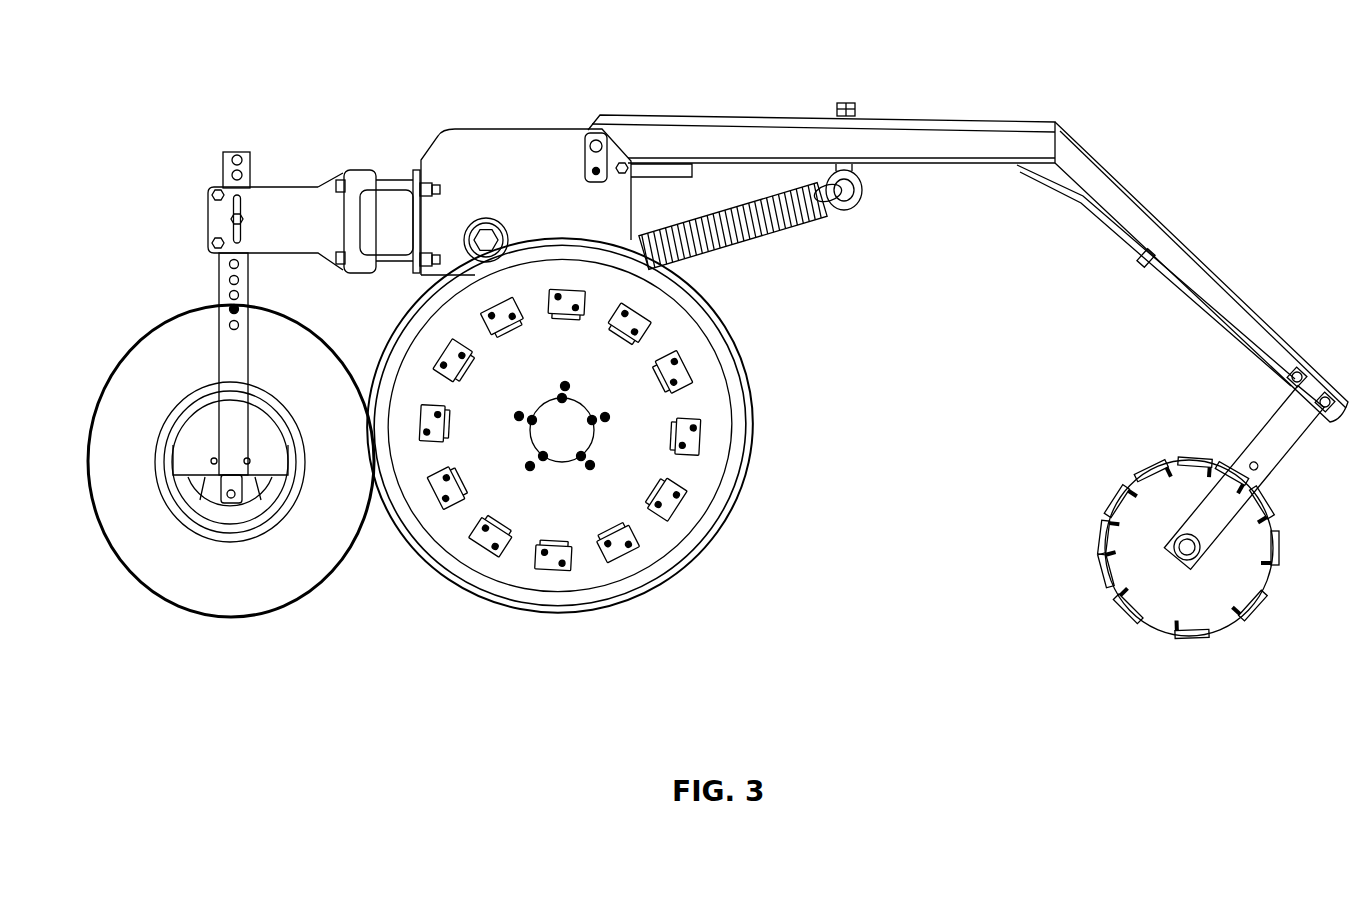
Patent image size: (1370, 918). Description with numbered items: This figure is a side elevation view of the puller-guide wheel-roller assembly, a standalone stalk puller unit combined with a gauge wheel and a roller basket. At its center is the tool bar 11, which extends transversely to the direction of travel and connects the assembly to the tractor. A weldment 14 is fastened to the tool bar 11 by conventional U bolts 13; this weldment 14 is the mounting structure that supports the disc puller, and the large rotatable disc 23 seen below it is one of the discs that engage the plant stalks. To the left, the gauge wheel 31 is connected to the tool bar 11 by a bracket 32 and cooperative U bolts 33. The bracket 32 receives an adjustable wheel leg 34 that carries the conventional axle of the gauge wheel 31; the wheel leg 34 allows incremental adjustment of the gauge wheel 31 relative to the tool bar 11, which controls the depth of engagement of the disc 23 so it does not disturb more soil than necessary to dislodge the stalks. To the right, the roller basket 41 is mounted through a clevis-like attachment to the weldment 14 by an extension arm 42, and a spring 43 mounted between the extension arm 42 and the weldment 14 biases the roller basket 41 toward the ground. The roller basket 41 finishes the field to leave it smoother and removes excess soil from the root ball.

The tool bar 11 is at (390, 207).
The U bolts 13 is at (393, 262).
The weldment 14 is at (512, 104).
The rotatable disc 23 is at (717, 403).
The gauge wheel 31 is at (160, 324).
The bracket 32 is at (307, 205).
The U bolts 33 is at (383, 182).
The adjustable wheel leg 34 is at (222, 295).
The roller basket 41 is at (1152, 485).
The extension arm 42 is at (950, 130).
The spring 43 is at (778, 245).